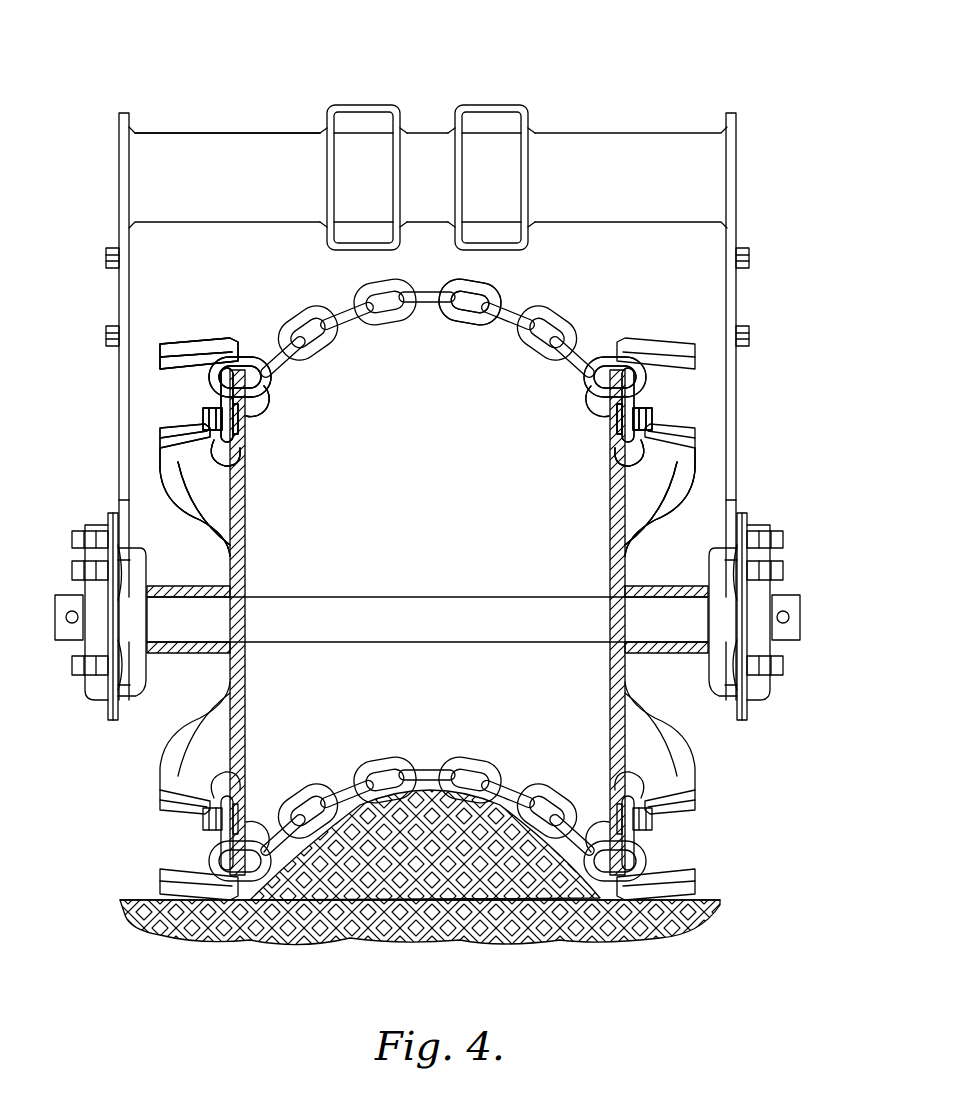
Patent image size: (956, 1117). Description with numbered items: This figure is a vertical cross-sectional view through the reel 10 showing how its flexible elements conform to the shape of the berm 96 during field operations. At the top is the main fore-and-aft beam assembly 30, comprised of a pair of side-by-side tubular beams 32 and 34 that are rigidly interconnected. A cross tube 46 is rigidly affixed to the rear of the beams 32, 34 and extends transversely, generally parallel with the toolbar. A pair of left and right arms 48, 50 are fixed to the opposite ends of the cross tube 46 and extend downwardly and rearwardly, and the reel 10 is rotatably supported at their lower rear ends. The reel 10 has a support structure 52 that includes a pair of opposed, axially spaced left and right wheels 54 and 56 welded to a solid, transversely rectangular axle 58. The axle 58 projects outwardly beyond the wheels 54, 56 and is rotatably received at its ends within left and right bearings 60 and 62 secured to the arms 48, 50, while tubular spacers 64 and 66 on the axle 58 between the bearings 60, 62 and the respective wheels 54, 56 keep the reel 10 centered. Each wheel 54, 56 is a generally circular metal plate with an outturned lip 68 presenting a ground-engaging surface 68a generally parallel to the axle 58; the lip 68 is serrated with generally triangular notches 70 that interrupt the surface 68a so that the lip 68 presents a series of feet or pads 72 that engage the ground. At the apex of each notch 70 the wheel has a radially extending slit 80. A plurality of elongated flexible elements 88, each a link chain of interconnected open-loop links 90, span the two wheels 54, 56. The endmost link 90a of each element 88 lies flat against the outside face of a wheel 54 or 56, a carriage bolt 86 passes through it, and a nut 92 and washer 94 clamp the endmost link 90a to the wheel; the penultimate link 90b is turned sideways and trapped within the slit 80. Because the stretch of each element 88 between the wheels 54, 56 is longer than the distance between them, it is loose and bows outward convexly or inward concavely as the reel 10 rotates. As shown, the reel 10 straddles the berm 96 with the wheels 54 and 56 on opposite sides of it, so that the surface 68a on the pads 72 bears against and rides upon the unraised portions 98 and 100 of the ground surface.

The reel 10 is at (685, 505).
The beam assembly 30 is at (472, 78).
The tubular beam 32 is at (346, 105).
The tubular beam 34 is at (515, 105).
The cross tube 46 is at (640, 145).
The left arm 48 is at (126, 360).
The right arm 50 is at (735, 375).
The support structure 52 is at (620, 335).
The left wheel 54 is at (250, 540).
The right wheel 56 is at (603, 547).
The axle 58 is at (385, 625).
The left bearing 60 is at (100, 688).
The right bearing 62 is at (758, 680).
The tubular spacer 64 is at (160, 655).
The tubular spacer 66 is at (695, 652).
The outturned lip 68 is at (188, 345).
The ground-engaging surface 68a is at (218, 338).
The notch 70 is at (180, 405).
The pad 72 is at (158, 338).
The slit 80 is at (212, 373).
The carriage bolt 86 is at (246, 420).
The flexible element 88 is at (427, 325).
The link 90 is at (490, 300).
The endmost link 90a is at (240, 432).
The penultimate link 90b is at (255, 357).
The nut 92 is at (205, 442).
The washer 94 is at (232, 448).
The berm 96 is at (493, 835).
The unraised portion of the ground surface 98 is at (170, 897).
The unraised portion of the ground surface 100 is at (710, 895).